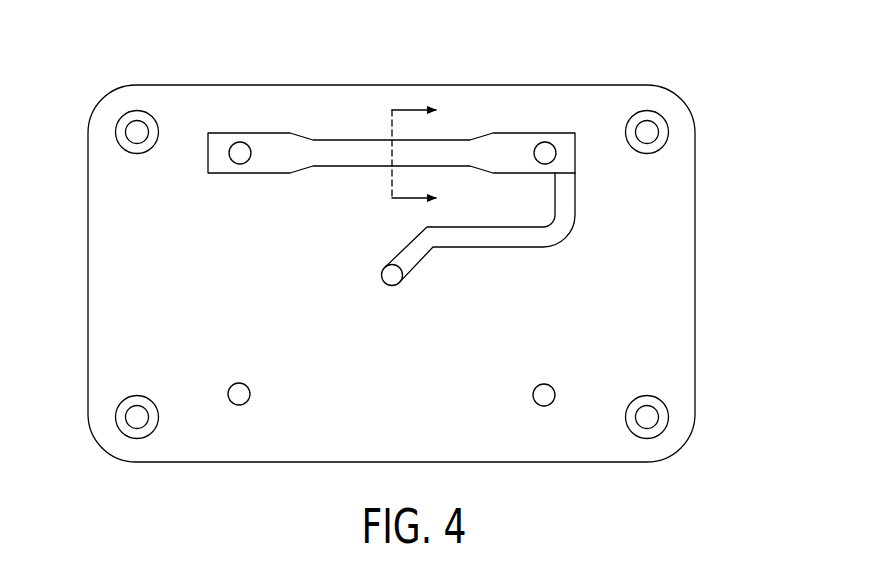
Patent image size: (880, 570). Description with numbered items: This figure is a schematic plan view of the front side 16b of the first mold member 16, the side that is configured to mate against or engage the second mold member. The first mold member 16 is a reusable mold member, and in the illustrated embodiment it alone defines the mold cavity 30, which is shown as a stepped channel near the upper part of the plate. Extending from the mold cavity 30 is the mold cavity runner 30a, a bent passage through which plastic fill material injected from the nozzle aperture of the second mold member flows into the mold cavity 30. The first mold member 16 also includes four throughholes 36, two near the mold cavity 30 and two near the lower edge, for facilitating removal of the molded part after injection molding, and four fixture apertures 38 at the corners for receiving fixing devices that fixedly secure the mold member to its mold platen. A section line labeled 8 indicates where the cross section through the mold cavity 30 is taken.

The first mold member 16 is at (740, 282).
The front side of the first mold member 16b is at (618, 103).
The mold cavity 30 is at (462, 152).
The mold cavity runner 30a is at (565, 220).
The throughholes 36 is at (240, 152).
The fixture apertures 38 is at (136, 132).
The section line 8- 8 is at (424, 156).